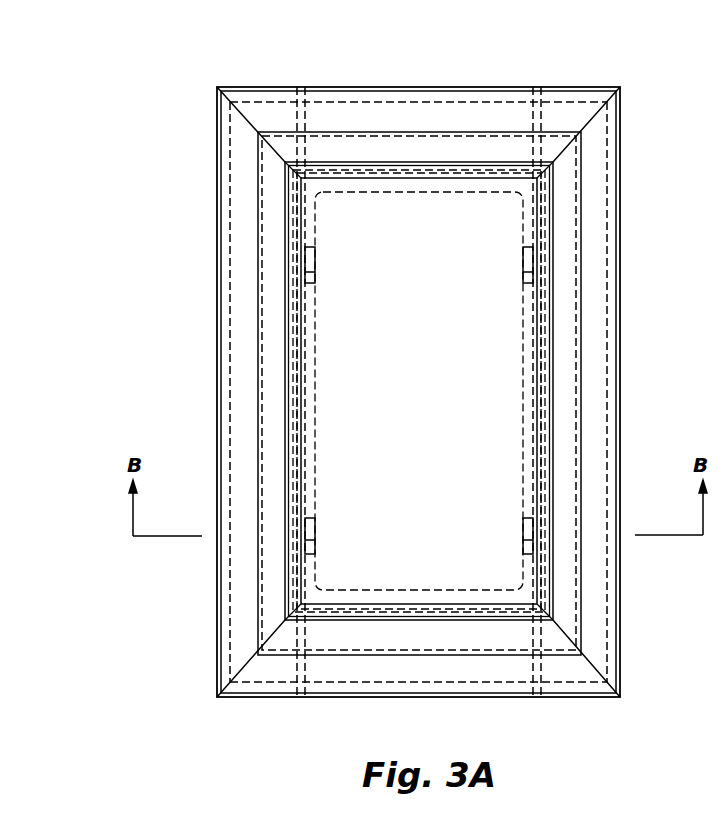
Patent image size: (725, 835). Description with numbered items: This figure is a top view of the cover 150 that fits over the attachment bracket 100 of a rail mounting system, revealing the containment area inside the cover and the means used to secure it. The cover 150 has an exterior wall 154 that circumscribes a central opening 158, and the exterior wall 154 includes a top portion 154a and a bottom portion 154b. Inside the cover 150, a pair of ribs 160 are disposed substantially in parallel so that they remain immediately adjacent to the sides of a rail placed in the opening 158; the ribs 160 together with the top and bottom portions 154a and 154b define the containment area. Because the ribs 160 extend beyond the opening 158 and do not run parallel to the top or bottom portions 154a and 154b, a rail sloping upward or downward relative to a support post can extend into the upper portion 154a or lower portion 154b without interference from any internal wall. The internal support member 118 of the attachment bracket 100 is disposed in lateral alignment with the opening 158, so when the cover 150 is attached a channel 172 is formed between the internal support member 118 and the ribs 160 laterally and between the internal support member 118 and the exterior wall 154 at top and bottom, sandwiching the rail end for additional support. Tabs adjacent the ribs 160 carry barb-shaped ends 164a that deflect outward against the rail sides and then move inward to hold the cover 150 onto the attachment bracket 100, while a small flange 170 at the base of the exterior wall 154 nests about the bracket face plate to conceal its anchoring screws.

The attachment bracket 100 is at (308, 87).
The cover 150 is at (597, 510).
The exterior wall 154 is at (595, 243).
The top portion of the exterior wall 154a is at (487, 115).
The bottom portion of the exterior wall 154b is at (325, 683).
The opening 158 is at (508, 208).
The channel 172 is at (542, 342).
The ribs 160 is at (530, 400).
The internal support member 118 is at (525, 428).
The barb-shaped ends 164a is at (315, 262).
The flange 170 is at (0, 727).